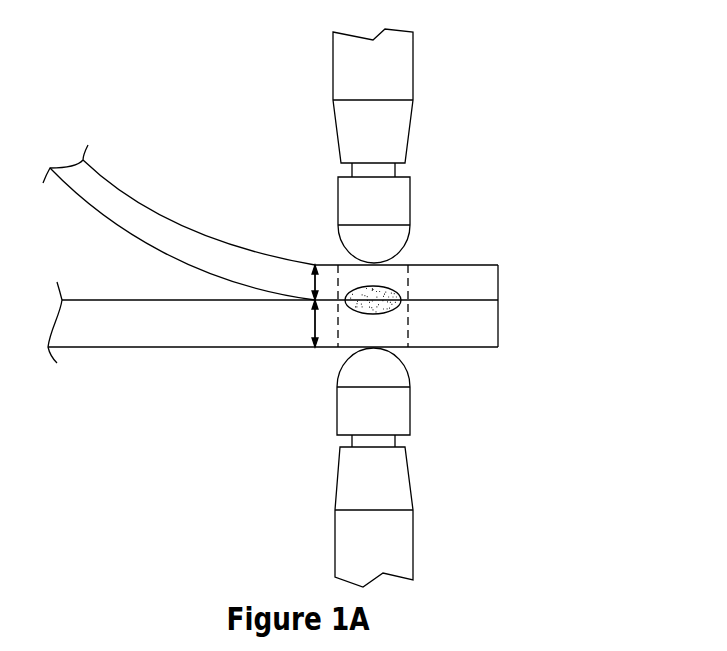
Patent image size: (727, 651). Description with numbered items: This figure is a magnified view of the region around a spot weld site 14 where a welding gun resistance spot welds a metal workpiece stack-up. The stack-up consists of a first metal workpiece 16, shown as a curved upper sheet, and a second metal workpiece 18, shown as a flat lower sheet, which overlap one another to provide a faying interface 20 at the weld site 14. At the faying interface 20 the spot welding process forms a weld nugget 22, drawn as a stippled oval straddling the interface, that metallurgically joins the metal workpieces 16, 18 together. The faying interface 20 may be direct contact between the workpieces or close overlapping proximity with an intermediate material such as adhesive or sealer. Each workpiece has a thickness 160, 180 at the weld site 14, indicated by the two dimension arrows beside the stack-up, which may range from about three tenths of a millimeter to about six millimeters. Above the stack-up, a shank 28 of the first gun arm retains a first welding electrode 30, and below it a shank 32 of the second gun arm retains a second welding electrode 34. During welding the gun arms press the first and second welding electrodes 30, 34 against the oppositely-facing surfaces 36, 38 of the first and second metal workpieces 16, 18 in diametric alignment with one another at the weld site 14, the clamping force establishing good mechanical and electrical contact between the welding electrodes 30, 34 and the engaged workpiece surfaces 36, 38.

The spot weld site 14 is at (408, 279).
The first metal workpiece 16 is at (143, 228).
The second metal workpiece 18 is at (112, 328).
The faying interface 20 is at (453, 300).
The weld nugget 22 is at (390, 312).
The shank 28 is at (382, 130).
The first welding electrode 30 is at (348, 200).
The shank 32 is at (360, 482).
The second welding electrode 34 is at (358, 410).
The surface of the first metal workpiece 36 is at (477, 263).
The surface of the second metal workpiece 38 is at (481, 347).
The thickness of the first metal workpiece 160 is at (307, 282).
The thickness of the second metal workpiece 180 is at (310, 325).